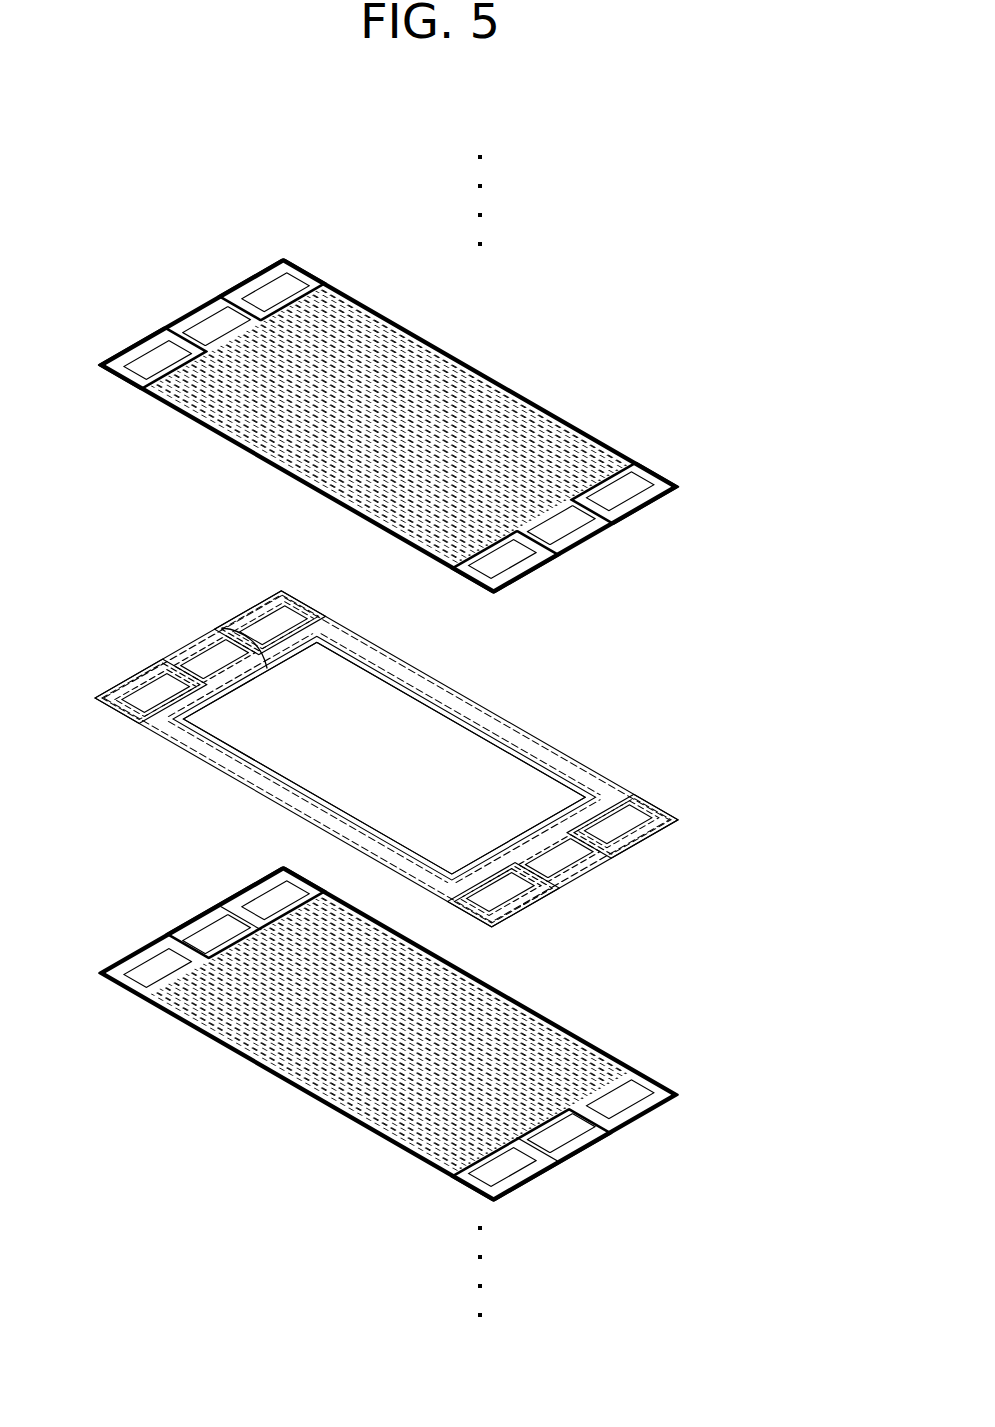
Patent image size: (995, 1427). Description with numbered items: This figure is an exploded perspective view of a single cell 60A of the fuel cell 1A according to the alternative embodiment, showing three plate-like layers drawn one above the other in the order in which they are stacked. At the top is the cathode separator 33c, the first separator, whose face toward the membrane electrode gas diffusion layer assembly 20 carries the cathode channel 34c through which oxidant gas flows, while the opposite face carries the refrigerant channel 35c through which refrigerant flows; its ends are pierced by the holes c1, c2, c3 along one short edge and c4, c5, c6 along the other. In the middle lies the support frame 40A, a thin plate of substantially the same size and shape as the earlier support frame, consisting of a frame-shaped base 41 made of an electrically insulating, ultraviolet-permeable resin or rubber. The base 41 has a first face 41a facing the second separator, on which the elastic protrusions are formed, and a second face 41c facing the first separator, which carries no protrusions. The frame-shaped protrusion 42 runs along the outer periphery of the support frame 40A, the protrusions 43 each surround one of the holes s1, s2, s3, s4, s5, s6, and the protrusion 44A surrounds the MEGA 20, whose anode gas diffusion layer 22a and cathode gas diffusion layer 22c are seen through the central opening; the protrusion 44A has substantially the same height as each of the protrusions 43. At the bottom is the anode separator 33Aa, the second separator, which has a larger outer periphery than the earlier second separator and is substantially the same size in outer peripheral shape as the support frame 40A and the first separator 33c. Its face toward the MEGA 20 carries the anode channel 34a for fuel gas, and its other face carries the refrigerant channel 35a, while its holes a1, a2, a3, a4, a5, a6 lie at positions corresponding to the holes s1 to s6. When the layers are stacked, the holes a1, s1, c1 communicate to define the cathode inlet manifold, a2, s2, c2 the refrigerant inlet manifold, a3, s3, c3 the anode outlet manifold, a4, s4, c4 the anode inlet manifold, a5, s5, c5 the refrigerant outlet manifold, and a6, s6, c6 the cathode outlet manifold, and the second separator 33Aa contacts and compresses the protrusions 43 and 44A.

The fuel cell 1A is at (702, 295).
The single cell 60A is at (750, 442).
The cathode separator 33c is at (163, 328).
The cathode channel 34c is at (180, 410).
The refrigerant channel 35c is at (375, 335).
The hole c1 is at (274, 291).
The hole c2 is at (216, 325).
The hole c3 is at (158, 358).
The hole c4 is at (624, 492).
The hole c5 is at (565, 526).
The hole c6 is at (506, 560).
The support frame 40A is at (690, 810).
The base 41 is at (620, 772).
The face 41a is at (226, 786).
The face 41c is at (426, 668).
The protrusion 42 is at (185, 760).
The protrusion 43 is at (283, 585).
The protrusion 44A is at (492, 716).
The membrane electrode gas diffusion layer assembly 20 is at (216, 657).
The cathode gas diffusion layer 22c is at (232, 710).
The anode gas diffusion layer 22a is at (492, 822).
The hole s1 is at (276, 623).
The hole s2 is at (207, 642).
The hole s3 is at (157, 690).
The hole s4 is at (622, 826).
The hole s5 is at (563, 861).
The hole s6 is at (502, 895).
The second separator 33Aa is at (162, 932).
The anode channel 34a is at (372, 1052).
The refrigerant channel 35a is at (400, 1142).
The hole a1 is at (274, 899).
The hole a2 is at (216, 933).
The hole a3 is at (158, 966).
The hole a4 is at (624, 1100).
The hole a5 is at (565, 1134).
The hole a6 is at (506, 1168).